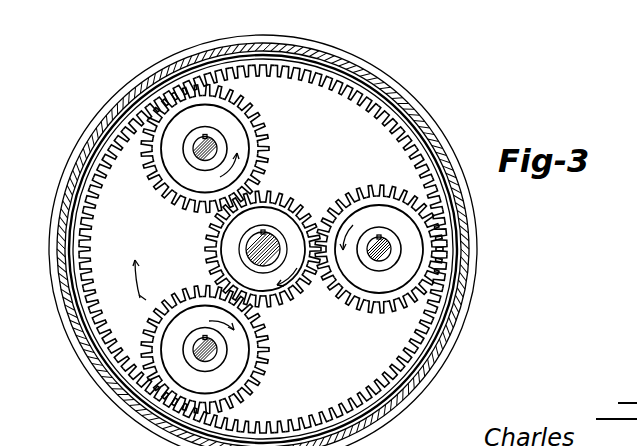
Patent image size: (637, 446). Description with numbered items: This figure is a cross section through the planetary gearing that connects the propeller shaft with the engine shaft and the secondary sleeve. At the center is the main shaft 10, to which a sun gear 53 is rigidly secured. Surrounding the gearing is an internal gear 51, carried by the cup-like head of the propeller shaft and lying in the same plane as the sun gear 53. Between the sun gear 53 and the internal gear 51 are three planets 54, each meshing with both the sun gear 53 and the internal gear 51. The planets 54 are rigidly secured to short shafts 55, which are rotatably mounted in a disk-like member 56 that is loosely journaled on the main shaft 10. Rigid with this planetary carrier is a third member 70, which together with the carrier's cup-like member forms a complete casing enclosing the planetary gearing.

The main shaft 10 is at (250, 247).
The internal gear 51 is at (85, 217).
The sun gear 53 is at (330, 285).
The planets 54 is at (266, 150).
The short shafts 55 is at (210, 137).
The disk-like member 56 is at (263, 249).
The third member 70 is at (269, 223).